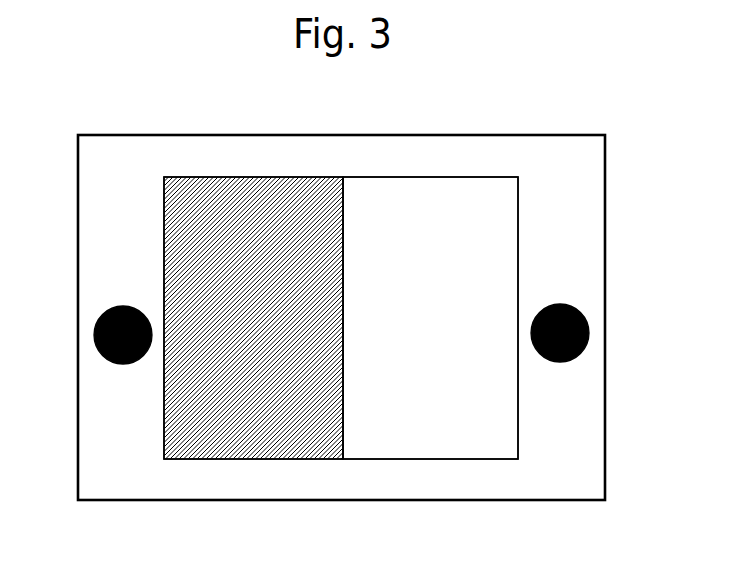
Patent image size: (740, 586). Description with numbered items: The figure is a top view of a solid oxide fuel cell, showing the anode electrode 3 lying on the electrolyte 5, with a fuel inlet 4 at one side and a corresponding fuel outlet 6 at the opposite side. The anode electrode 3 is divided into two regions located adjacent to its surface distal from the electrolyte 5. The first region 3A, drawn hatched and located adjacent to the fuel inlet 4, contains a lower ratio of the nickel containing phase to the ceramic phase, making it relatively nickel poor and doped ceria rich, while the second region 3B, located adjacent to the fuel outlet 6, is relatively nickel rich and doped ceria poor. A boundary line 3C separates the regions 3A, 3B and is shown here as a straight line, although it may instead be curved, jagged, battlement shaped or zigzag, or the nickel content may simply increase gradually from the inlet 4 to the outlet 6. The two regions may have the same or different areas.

The anode electrode 3 is at (359, 466).
The first region 3A is at (234, 190).
The second region 3B is at (443, 190).
The boundary line 3C is at (343, 201).
The fuel inlet 4 is at (94, 337).
The electrolyte 5 is at (288, 157).
The fuel outlet 6 is at (590, 333).